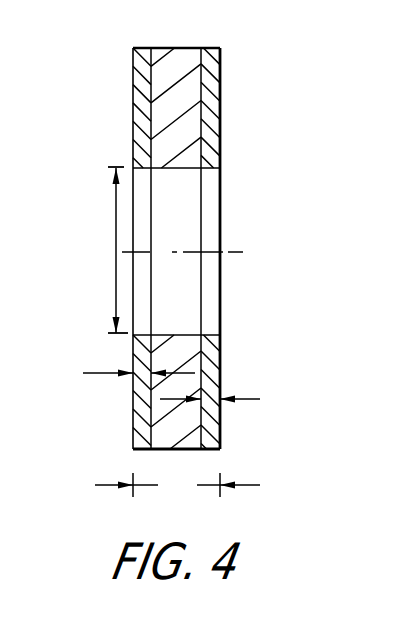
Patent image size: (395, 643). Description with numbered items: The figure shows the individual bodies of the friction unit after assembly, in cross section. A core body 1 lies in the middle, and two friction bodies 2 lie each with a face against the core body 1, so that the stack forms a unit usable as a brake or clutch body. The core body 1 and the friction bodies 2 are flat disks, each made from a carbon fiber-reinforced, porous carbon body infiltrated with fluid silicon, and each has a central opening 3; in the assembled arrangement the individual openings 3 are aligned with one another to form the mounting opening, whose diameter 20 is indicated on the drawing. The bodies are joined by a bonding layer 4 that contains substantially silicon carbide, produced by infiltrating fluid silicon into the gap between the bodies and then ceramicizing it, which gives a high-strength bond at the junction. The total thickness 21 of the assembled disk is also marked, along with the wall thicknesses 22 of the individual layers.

The core body 1 is at (180, 65).
The friction body 2 is at (148, 92).
The central opening 3 is at (185, 237).
The bonding layer 4 is at (148, 142).
The diameter of the mounting opening 20 is at (115, 300).
The total thickness 21 is at (177, 481).
The wall thickness dimension 22 is at (218, 392).